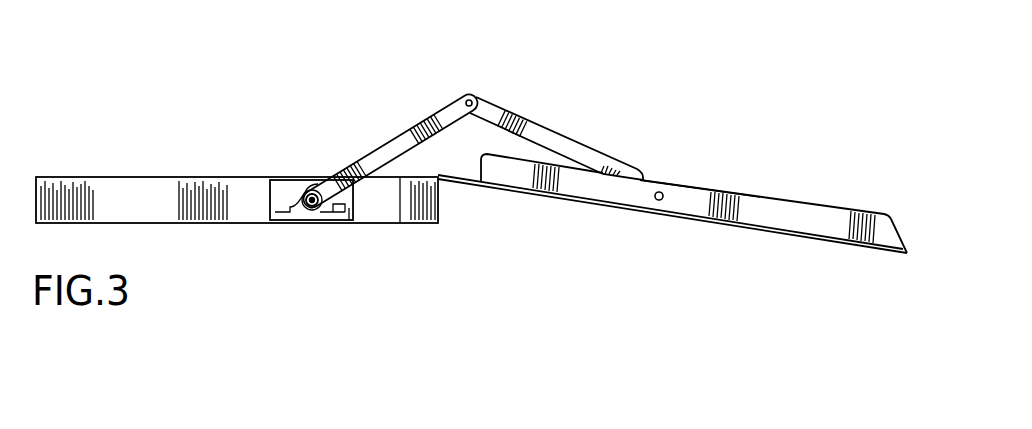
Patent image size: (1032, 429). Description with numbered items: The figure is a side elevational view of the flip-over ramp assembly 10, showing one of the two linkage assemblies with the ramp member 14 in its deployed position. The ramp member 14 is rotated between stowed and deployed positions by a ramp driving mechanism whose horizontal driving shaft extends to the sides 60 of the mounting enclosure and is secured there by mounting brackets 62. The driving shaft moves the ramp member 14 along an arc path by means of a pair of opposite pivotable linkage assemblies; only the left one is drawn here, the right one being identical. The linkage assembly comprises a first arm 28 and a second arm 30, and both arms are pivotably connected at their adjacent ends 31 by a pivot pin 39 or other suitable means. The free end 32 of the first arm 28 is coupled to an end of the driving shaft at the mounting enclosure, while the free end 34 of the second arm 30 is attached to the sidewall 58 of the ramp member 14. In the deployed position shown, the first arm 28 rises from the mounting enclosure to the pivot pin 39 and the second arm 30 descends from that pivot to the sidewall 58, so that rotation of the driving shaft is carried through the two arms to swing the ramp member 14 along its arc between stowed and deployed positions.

The hinge assembly 10 is at (702, 44).
The ramp member 14 is at (147, 224).
The first arm 28 is at (392, 140).
The second arm 30 is at (550, 129).
The adjacent ends 31 is at (467, 97).
The free end 32 is at (323, 186).
The free end 34 is at (641, 181).
The pivot pin 39 is at (497, 105).
The sidewall 58 is at (673, 201).
The sides 60 is at (418, 224).
The mounting brackets 62 is at (340, 222).